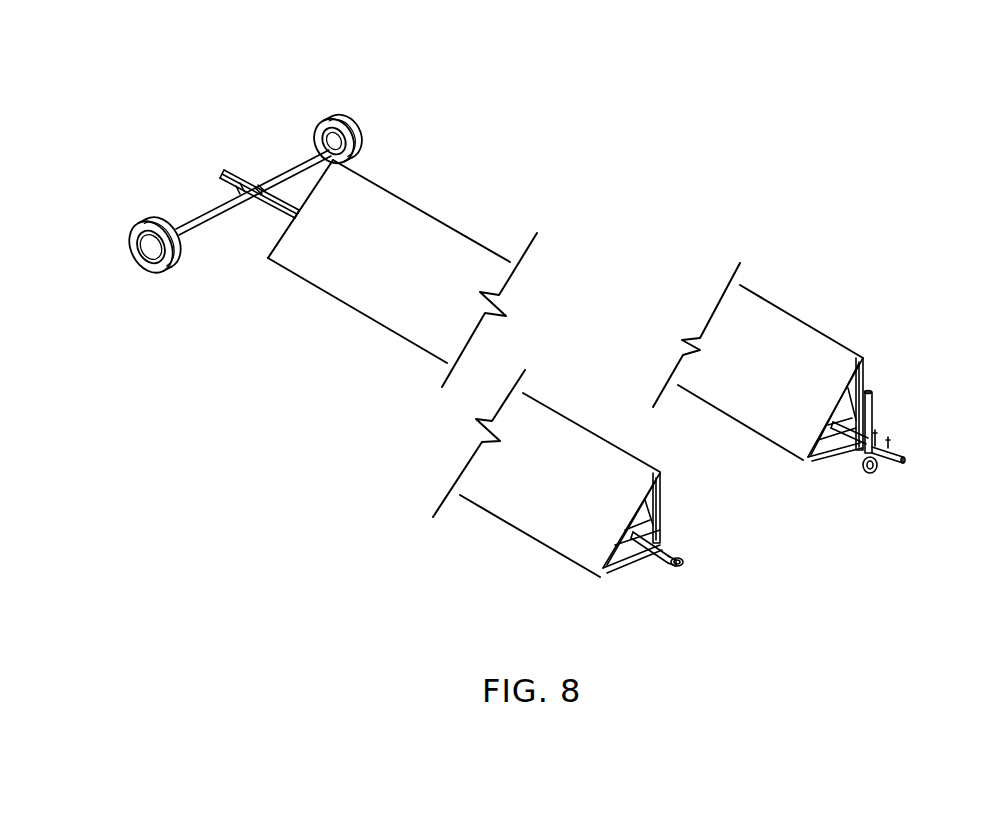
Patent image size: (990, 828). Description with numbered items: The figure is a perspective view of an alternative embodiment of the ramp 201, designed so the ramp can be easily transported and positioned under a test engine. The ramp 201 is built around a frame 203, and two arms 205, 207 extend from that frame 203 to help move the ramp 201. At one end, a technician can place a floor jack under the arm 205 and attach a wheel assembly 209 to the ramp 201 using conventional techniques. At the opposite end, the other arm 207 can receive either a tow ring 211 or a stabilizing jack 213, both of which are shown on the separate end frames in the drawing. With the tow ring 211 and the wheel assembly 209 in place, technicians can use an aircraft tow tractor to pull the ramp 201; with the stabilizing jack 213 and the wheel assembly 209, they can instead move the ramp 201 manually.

The ramp 201 is at (755, 163).
The frame 203 is at (661, 502).
The arm 205 is at (277, 207).
The arm 207 is at (641, 555).
The wheel assembly 209 is at (353, 132).
The tow ring 211 is at (682, 566).
The stabilizing jack 213 is at (873, 422).